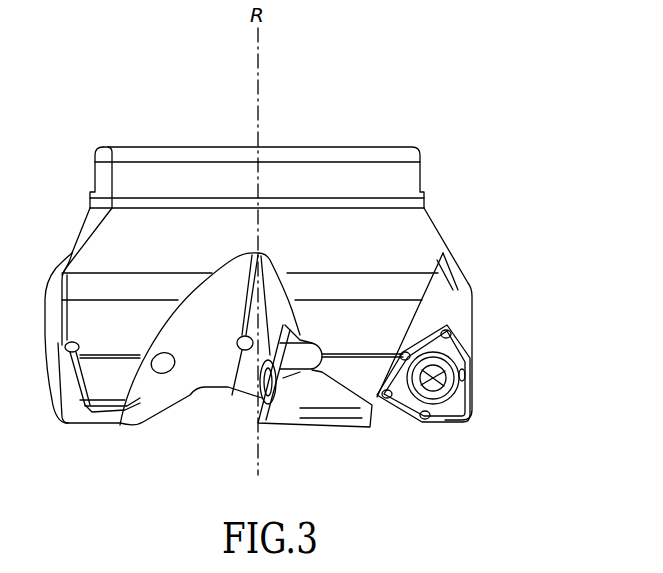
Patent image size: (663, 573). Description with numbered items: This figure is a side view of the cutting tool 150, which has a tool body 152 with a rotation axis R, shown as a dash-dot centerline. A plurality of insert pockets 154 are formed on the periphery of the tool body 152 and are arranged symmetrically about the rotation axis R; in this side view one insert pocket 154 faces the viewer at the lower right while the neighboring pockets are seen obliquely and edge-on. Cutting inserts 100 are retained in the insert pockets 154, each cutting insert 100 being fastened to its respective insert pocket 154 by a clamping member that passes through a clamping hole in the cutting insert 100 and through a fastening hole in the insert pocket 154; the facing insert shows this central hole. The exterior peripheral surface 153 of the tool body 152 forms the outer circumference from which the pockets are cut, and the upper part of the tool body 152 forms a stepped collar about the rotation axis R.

The cutting insert 100 is at (480, 408).
The cutting tool 150 is at (405, 109).
The tool body 152 is at (417, 223).
The exterior peripheral surface 153 is at (341, 390).
The insert pocket 154 is at (474, 366).